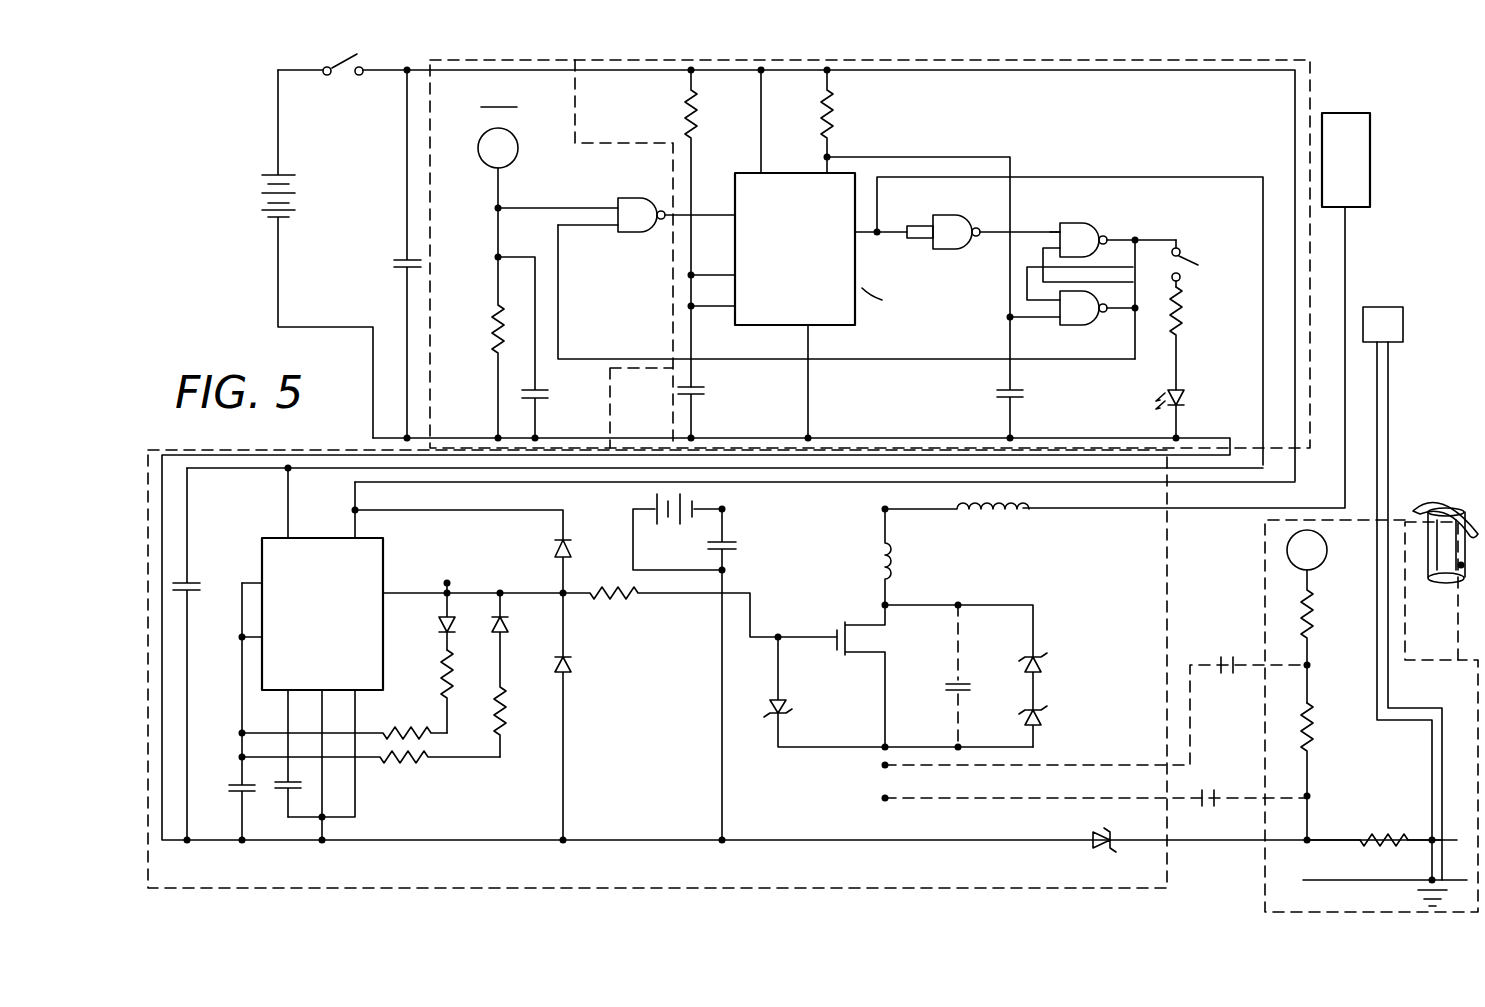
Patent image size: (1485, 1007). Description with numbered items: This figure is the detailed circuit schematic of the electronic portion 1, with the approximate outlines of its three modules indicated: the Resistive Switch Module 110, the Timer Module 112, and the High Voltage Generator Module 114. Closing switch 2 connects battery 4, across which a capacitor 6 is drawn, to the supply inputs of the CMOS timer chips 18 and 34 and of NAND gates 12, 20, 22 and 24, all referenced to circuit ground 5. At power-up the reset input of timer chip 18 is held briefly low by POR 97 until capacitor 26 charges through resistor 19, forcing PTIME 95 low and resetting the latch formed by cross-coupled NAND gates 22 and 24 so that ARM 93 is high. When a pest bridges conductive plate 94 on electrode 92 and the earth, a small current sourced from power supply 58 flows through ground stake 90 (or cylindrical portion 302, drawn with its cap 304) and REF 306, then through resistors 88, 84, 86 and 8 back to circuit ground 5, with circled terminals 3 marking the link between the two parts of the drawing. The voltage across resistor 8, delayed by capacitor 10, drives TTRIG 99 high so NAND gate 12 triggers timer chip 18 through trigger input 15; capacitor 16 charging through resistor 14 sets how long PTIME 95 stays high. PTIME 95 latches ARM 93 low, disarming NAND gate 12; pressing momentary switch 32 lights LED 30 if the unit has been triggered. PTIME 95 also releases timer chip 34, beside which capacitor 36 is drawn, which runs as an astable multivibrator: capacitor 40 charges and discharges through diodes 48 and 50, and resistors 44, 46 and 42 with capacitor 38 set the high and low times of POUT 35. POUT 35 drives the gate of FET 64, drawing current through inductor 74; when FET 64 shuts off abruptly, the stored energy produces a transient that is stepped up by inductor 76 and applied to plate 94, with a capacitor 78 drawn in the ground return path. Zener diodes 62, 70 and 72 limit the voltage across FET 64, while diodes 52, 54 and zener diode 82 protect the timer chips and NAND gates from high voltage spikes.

The electronic portion 1 is at (218, 112).
The switch 2 is at (342, 62).
The terminal 3 is at (902, 349).
The battery 4 is at (270, 174).
The circuit ground 5 is at (893, 438).
The filter capacitor 100/16 6 is at (400, 259).
The resistor 8 is at (496, 312).
The capacitor 10 is at (548, 392).
The NAND gate 12 is at (636, 198).
The resistor 14 is at (703, 104).
The trigger input 15 is at (698, 214).
The capacitor 16 is at (705, 390).
The CMOS 555 timer chip 18 is at (761, 326).
The resistor 19 is at (840, 95).
The NAND gate 20 is at (945, 215).
The NAND gate 22 is at (1070, 223).
The NAND gate 24 is at (1065, 326).
The capacitor 26 is at (1023, 390).
The light emitting diode 30 is at (1188, 392).
The momentary switch 32 is at (1195, 263).
The CMOS 555 timer chip 34 is at (280, 538).
The POUT 35 is at (405, 593).
The capacitor .01 36 is at (190, 583).
The capacitor 38 is at (238, 782).
The capacitor 40 is at (285, 795).
The resistor 42 is at (420, 760).
The resistor 44 is at (428, 728).
The resistor 46 is at (443, 665).
The diode 48 is at (439, 628).
The diode 50 is at (508, 630).
The diode 52 is at (560, 540).
The diode 54 is at (573, 677).
The power supply 58 is at (672, 526).
The zener diode 62 is at (773, 698).
The FET 64 is at (835, 640).
The zener diode 70 is at (1012, 635).
The zener diode 72 is at (1033, 705).
The inductor 74 is at (878, 560).
The inductor 76 is at (1025, 512).
The capacitor .01 78 is at (1227, 655).
The zener diode 82 is at (1093, 838).
The resistor 84 is at (1318, 705).
The resistor 86 is at (1318, 606).
The resistor 88 is at (1360, 835).
The ground stake 90 is at (1388, 307).
The high voltage electrode 92 is at (1346, 245).
The ARM signal 93 is at (565, 298).
The conductive plate 94 is at (1370, 146).
The PTIME signal 95 is at (1085, 177).
The POR signal 97 is at (958, 157).
The TTRIG signal 99 is at (493, 210).
The resistive switch module 110 is at (1268, 590).
The timer module 112 is at (1310, 95).
The high voltage generator module 114 is at (514, 885).
The cylindrical portion 302 is at (1444, 586).
The cup lid 304 is at (1430, 507).
The REF 306 is at (1420, 836).